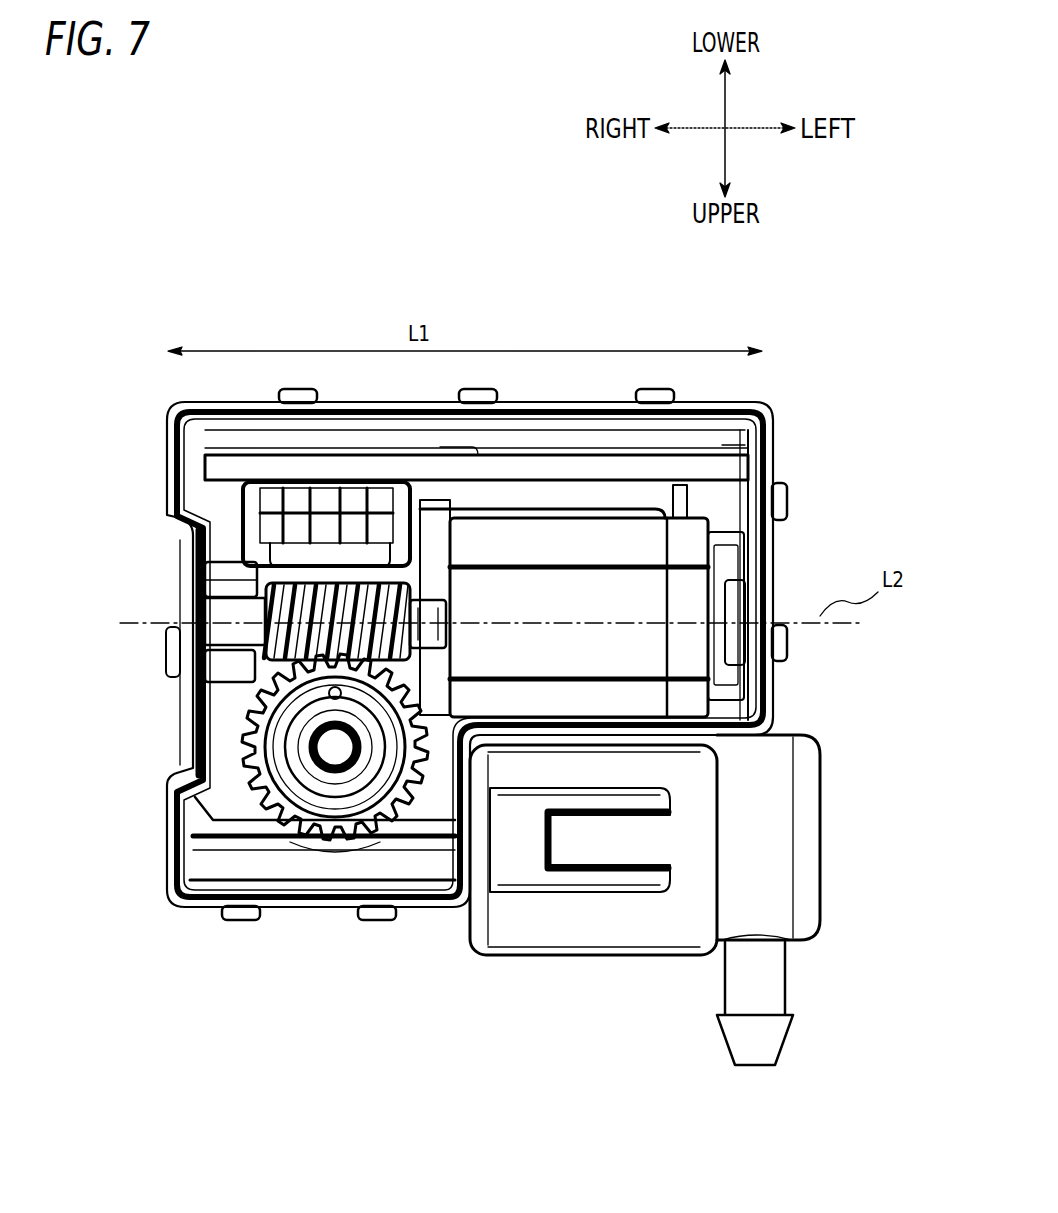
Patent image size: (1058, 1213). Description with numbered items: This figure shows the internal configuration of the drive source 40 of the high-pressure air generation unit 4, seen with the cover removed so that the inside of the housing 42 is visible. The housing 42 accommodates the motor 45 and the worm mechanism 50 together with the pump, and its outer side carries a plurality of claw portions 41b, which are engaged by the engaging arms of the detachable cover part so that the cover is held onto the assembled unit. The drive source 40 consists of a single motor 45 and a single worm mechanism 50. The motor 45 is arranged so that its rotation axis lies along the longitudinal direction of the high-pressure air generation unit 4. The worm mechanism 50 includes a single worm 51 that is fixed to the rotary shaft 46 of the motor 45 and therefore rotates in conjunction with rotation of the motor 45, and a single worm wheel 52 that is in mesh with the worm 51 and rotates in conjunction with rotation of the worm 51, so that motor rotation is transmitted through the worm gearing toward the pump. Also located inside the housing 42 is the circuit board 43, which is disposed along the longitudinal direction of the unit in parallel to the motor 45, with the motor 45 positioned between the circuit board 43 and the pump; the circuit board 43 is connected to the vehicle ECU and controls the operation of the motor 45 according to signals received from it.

The high-pressure air generation unit 4 is at (361, 238).
The drive source 40 is at (465, 662).
The claw portions 41b is at (300, 390).
The housing 42 is at (743, 402).
The circuit board 43 is at (580, 468).
The motor 45 is at (655, 608).
The rotary shaft 46 is at (446, 640).
The worm mechanism 50 is at (108, 533).
The worm 51 is at (248, 607).
The worm wheel 52 is at (256, 717).